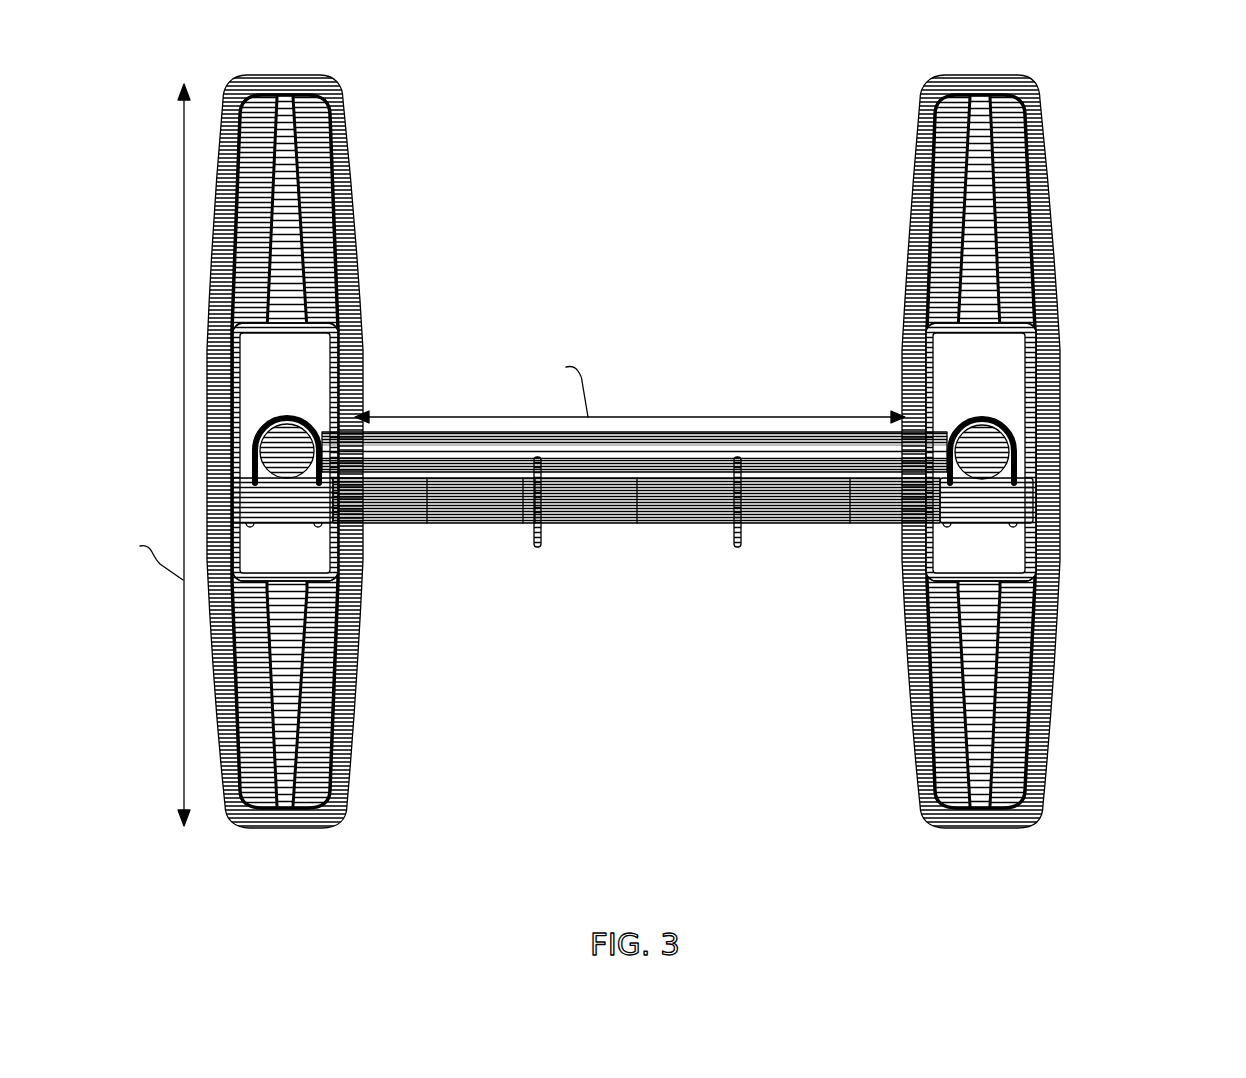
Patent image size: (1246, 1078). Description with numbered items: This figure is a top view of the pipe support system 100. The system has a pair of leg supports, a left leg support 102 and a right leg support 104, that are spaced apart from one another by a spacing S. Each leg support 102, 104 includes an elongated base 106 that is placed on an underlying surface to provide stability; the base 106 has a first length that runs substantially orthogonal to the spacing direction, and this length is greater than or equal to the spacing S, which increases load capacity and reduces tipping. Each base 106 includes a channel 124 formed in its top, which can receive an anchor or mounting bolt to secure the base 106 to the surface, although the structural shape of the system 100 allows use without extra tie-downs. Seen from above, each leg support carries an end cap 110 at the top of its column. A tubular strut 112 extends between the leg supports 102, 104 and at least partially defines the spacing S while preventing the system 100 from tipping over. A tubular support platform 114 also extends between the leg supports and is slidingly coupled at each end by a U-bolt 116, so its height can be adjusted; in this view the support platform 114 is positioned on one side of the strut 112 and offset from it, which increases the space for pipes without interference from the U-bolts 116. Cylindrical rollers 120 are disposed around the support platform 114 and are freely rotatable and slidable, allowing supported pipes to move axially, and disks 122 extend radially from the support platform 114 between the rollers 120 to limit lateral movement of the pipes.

The pipe support system 100 is at (669, 463).
The left leg support 102 is at (233, 836).
The right leg support 104 is at (1032, 834).
The elongated base 106 is at (645, 484).
The end cap 110 is at (283, 456).
The strut 112 is at (680, 435).
The support platform 114 is at (1012, 502).
The U-bolt 116 is at (262, 427).
The rollers 120 is at (492, 523).
The disks 122 is at (738, 547).
The channel 124 is at (302, 695).